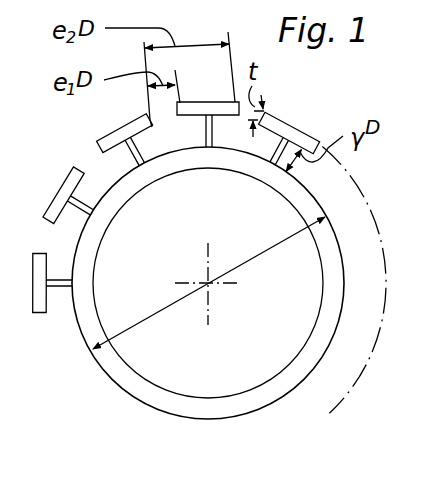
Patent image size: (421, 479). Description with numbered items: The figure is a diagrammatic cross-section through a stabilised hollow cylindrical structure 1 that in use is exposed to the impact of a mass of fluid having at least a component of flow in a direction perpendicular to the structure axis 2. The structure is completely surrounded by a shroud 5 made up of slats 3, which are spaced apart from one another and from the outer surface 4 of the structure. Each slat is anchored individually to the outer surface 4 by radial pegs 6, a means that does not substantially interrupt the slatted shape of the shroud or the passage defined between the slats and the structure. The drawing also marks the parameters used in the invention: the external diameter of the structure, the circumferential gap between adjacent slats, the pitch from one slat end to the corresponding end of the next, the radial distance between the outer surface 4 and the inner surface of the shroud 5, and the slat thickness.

The hollow cylindrical structure 1 is at (128, 421).
The structure axis 2 is at (208, 281).
The slats 3 is at (35, 253).
The outer surface 4 is at (130, 380).
The shroud 5 is at (92, 130).
The radial pegs 6 is at (66, 290).